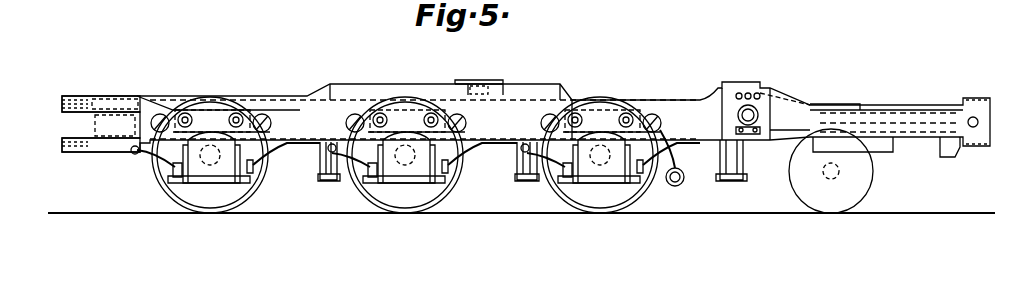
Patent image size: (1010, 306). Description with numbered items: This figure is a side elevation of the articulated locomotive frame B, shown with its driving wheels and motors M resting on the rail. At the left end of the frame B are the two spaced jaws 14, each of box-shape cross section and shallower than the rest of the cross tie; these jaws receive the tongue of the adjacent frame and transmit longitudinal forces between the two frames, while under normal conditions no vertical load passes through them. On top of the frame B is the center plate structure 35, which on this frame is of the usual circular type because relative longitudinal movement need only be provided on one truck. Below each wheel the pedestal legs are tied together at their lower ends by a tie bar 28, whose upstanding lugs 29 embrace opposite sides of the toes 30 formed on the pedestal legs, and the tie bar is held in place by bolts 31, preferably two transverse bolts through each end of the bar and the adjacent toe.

The spaced jaws 14 is at (60, 100).
The tie bar 28 is at (205, 183).
The upstanding lugs 29 is at (188, 178).
The toes 30 is at (240, 193).
The bolts 31 is at (173, 167).
The center plate structure 35 is at (487, 79).
The articulated frame B is at (683, 103).
The motor M is at (270, 188).